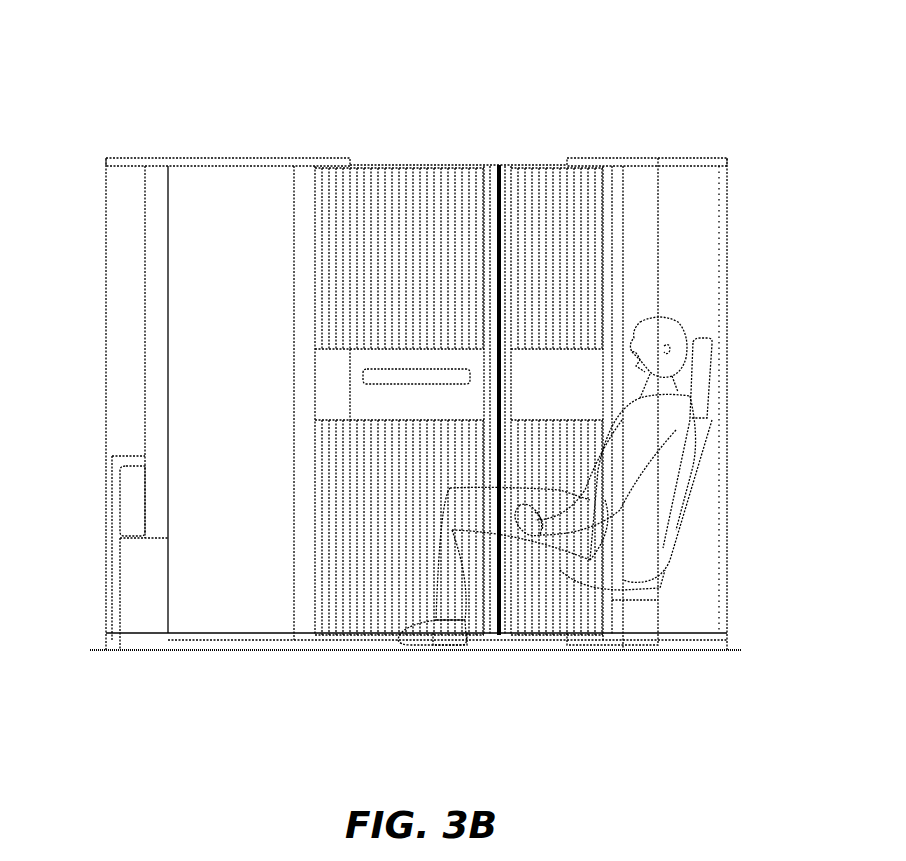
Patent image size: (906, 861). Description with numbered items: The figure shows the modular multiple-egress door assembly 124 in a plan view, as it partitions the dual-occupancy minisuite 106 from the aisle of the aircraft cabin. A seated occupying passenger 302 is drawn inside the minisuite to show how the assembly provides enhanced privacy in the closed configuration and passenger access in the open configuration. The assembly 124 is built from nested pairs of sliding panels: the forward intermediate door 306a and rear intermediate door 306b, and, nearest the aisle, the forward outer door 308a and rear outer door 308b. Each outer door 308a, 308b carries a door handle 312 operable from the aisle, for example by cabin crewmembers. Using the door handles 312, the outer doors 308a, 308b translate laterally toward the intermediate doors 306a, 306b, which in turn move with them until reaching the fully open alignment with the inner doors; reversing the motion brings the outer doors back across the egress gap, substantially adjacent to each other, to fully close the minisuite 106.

The modular multiple-egress door assembly 124 is at (90, 86).
The dual-occupancy minisuite 106 is at (690, 158).
The occupying passenger 302 is at (640, 450).
The forward intermediate door 306a is at (235, 558).
The rear intermediate door 306b is at (643, 598).
The forward outer door 308a is at (445, 252).
The rear outer door 308b is at (526, 228).
The door handle 312 is at (487, 387).